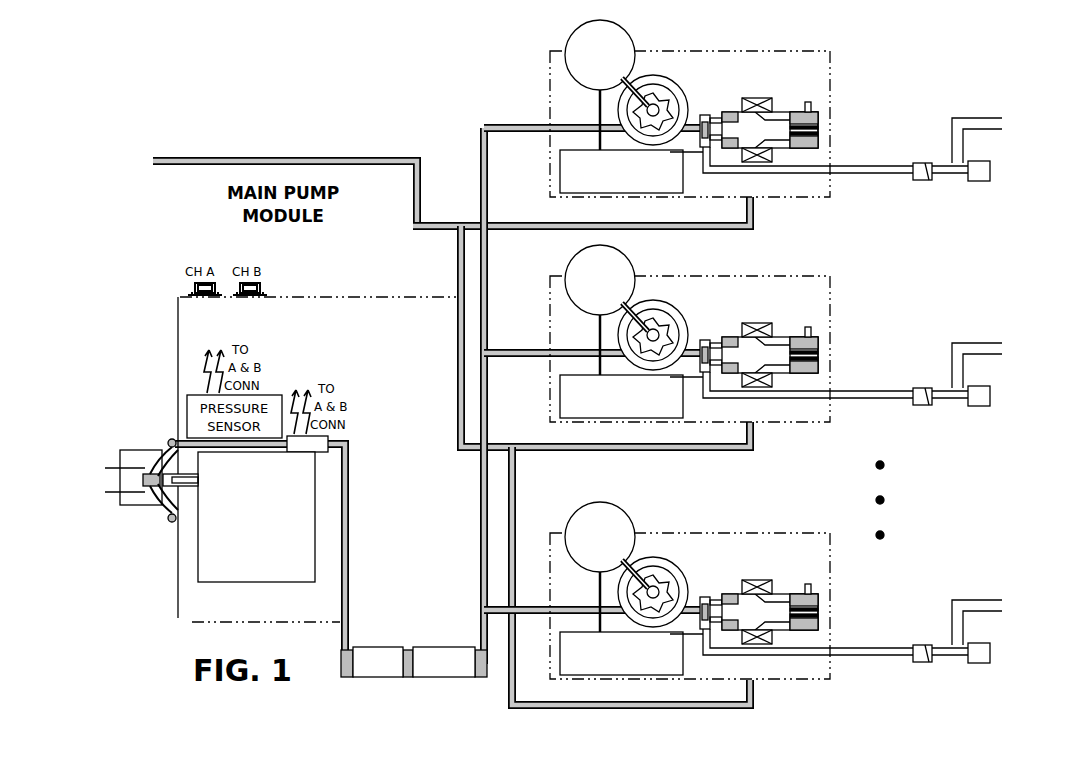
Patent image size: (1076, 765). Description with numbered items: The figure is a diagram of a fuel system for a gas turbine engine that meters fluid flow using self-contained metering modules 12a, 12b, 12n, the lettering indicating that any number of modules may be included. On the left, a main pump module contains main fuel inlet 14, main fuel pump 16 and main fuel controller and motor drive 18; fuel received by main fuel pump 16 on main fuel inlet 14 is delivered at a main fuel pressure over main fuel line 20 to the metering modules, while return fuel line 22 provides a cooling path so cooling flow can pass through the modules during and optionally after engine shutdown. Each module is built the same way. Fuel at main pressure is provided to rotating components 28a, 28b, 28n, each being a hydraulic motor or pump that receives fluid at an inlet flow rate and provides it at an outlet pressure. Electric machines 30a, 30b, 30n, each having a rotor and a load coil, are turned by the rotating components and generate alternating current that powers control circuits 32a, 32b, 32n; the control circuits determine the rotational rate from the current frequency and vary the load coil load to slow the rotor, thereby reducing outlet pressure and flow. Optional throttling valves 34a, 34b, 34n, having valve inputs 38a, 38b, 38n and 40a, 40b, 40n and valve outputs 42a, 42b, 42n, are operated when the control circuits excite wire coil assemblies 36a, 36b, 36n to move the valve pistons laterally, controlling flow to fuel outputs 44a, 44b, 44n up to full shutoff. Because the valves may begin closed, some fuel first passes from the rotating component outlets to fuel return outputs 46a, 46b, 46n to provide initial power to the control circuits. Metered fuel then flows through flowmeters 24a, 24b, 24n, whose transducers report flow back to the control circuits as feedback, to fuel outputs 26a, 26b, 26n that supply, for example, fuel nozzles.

The metering module 12a is at (830, 71).
The metering module 12b is at (690, 349).
The metering module 12n is at (690, 606).
The main fuel inlet 14 is at (133, 493).
The main fuel pump 16 is at (163, 513).
The main fuel controller and motor drive 18 is at (245, 582).
The main fuel line 20 is at (347, 535).
The return fuel line 22 is at (262, 160).
The flowmeter 24a is at (945, 172).
The flowmeter 24b is at (951, 413).
The flowmeter 24n is at (951, 670).
The fuel output 26a is at (968, 116).
The fuel output 26b is at (981, 352).
The fuel output 26n is at (981, 609).
The rotating component 28a is at (672, 90).
The rotating component 28b is at (668, 331).
The rotating component 28n is at (668, 588).
The electric machine 30a is at (632, 45).
The electric machine 30b is at (626, 280).
The electric machine 30n is at (626, 537).
The control circuit 32a is at (676, 184).
The control circuit 32b is at (621, 396).
The control circuit 32n is at (621, 653).
The throttling valve 34a is at (772, 112).
The throttling valve 34b is at (770, 339).
The throttling valve 34n is at (770, 596).
The wire coil assembly 36a is at (748, 98).
The wire coil assembly 36b is at (781, 341).
The wire coil assembly 36n is at (781, 598).
The valve input 38a is at (702, 114).
The valve input 38b is at (716, 344).
The valve input 38n is at (716, 601).
The valve input 40a is at (808, 102).
The valve input 40b is at (837, 324).
The valve input 40n is at (837, 581).
The valve output 42a is at (697, 150).
The valve output 42b is at (703, 395).
The valve output 42n is at (703, 652).
The fuel output 44a is at (842, 175).
The fuel output 44b is at (840, 407).
The fuel output 44n is at (840, 664).
The fuel return output 46a is at (752, 215).
The fuel return output 46b is at (752, 440).
The fuel return output 46n is at (752, 692).